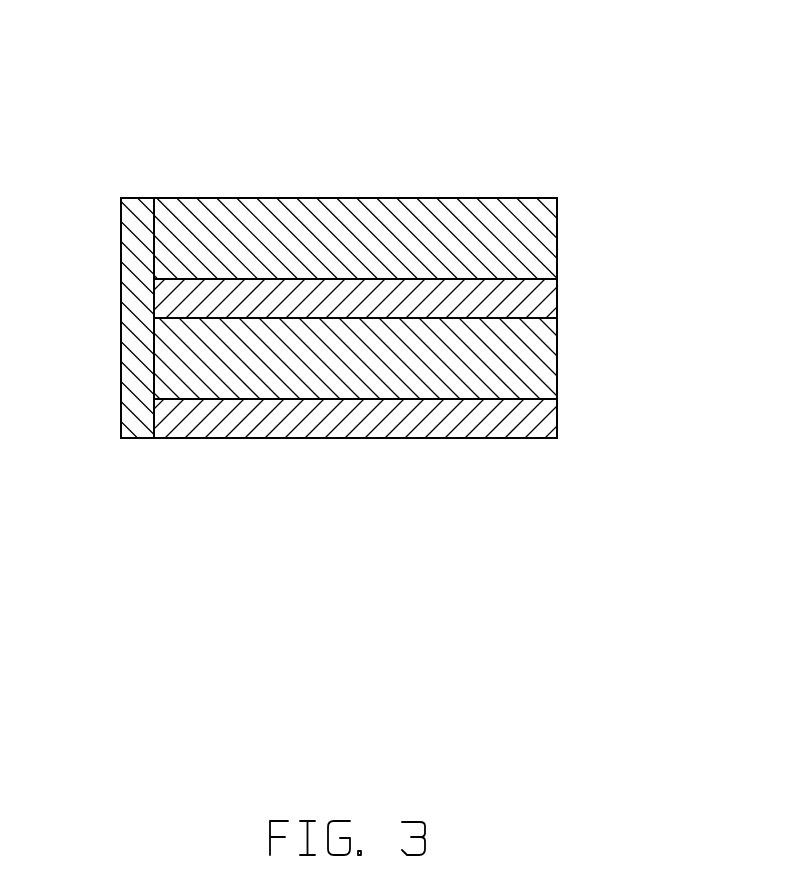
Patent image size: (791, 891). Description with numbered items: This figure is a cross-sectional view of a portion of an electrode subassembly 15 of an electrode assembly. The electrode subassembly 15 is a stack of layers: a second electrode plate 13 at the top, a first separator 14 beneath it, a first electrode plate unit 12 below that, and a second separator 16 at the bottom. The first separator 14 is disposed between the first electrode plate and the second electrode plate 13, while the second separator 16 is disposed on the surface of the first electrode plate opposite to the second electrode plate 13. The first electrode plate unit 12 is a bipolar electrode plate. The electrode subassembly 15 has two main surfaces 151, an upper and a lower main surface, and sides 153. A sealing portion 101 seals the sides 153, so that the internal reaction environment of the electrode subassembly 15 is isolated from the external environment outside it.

The electrode subassembly 15 is at (298, 42).
The main surfaces 151 is at (427, 198).
The sides 153 is at (155, 238).
The sealing portion 101 is at (135, 346).
The second electrode plate 13 is at (540, 213).
The first separator 14 is at (545, 305).
The first electrode plate unit 12 is at (540, 345).
The second separator 16 is at (543, 423).